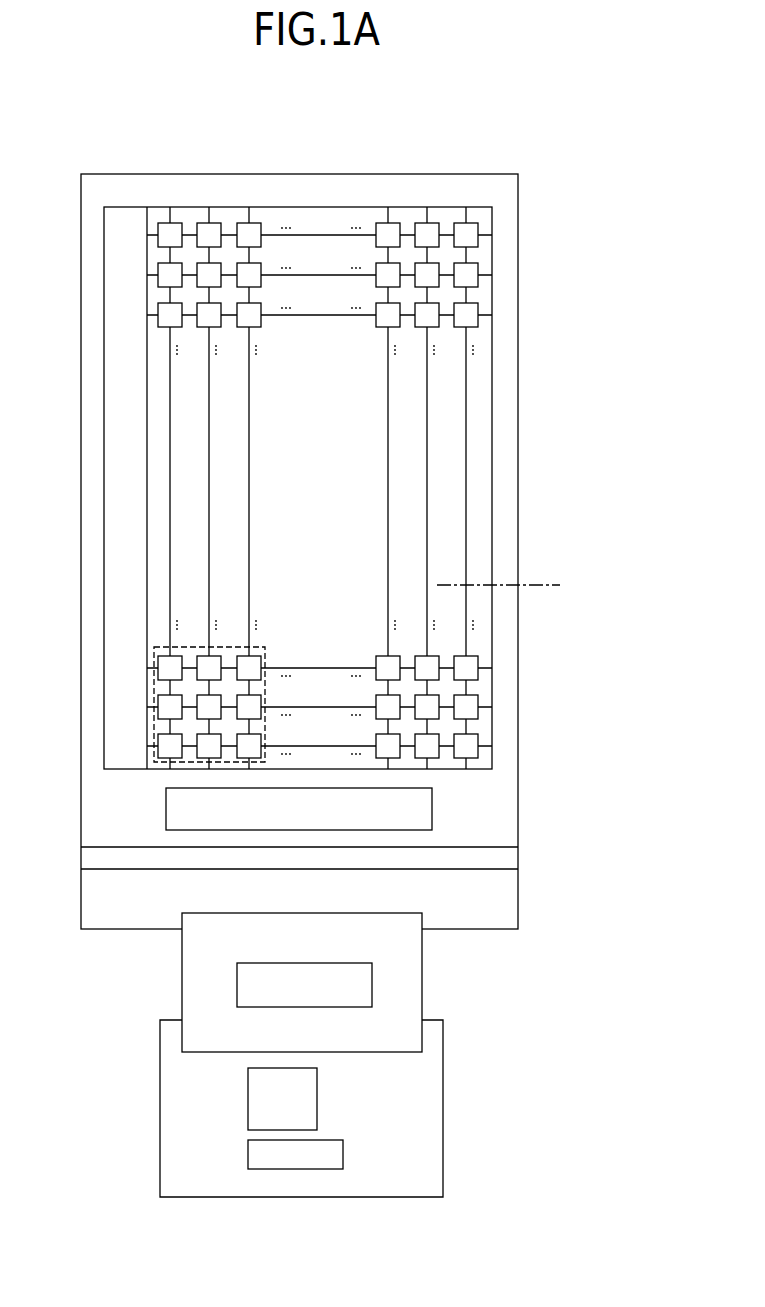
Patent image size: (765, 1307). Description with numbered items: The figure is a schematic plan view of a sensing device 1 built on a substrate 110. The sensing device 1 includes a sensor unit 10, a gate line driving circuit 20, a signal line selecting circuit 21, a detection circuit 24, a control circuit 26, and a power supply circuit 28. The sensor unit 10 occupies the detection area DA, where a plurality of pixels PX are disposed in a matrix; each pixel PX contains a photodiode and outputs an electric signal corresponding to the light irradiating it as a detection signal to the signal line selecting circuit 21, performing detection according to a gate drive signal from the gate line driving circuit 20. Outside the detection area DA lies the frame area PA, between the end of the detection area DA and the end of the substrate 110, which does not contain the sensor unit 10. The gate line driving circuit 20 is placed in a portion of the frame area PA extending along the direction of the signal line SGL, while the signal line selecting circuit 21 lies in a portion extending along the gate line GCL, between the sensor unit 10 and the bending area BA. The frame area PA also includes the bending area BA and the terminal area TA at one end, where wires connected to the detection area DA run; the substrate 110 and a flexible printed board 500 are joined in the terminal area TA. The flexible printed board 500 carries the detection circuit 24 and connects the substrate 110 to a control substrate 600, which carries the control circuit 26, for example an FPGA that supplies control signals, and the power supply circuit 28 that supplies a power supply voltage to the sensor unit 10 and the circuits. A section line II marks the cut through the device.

The sensing device 1 is at (612, 146).
The substrate 110 is at (518, 396).
The sensor unit 10 is at (493, 543).
The gate line driving circuit 20 is at (104, 255).
The detection area DA is at (371, 440).
The gate line GCL is at (482, 275).
The signal line SGL is at (466, 222).
The pixel PX is at (165, 224).
The frame area PA is at (508, 657).
The section line II- II is at (553, 592).
The signal line selecting circuit 21 is at (432, 803).
The bending area BA is at (524, 848).
The terminal area TA is at (524, 871).
The flexible printed board 500 is at (182, 977).
The detection circuit 24 is at (372, 982).
The control substrate 600 is at (160, 1070).
The control circuit 26 is at (317, 1097).
The power supply circuit 28 is at (343, 1150).